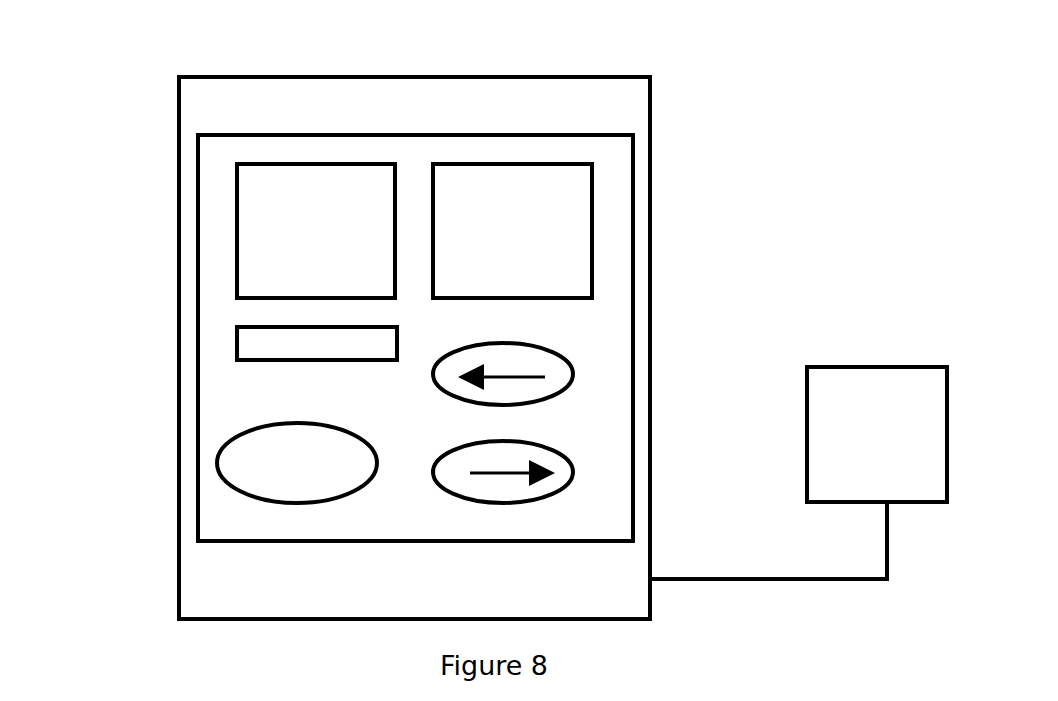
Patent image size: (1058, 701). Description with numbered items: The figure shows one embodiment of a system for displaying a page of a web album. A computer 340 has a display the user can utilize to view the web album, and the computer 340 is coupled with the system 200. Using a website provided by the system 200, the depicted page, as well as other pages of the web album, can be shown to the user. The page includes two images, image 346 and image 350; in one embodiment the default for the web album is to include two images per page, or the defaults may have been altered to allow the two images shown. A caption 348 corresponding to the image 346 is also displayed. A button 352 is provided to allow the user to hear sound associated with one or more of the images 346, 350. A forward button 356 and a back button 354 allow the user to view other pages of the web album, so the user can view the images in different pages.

The computer 340 is at (414, 321).
The image 346 is at (225, 228).
The image 350 is at (604, 231).
The caption 348 is at (226, 374).
The button 352 is at (207, 470).
The back button 354 is at (603, 358).
The forward button 356 is at (603, 456).
The system 200 is at (800, 445).